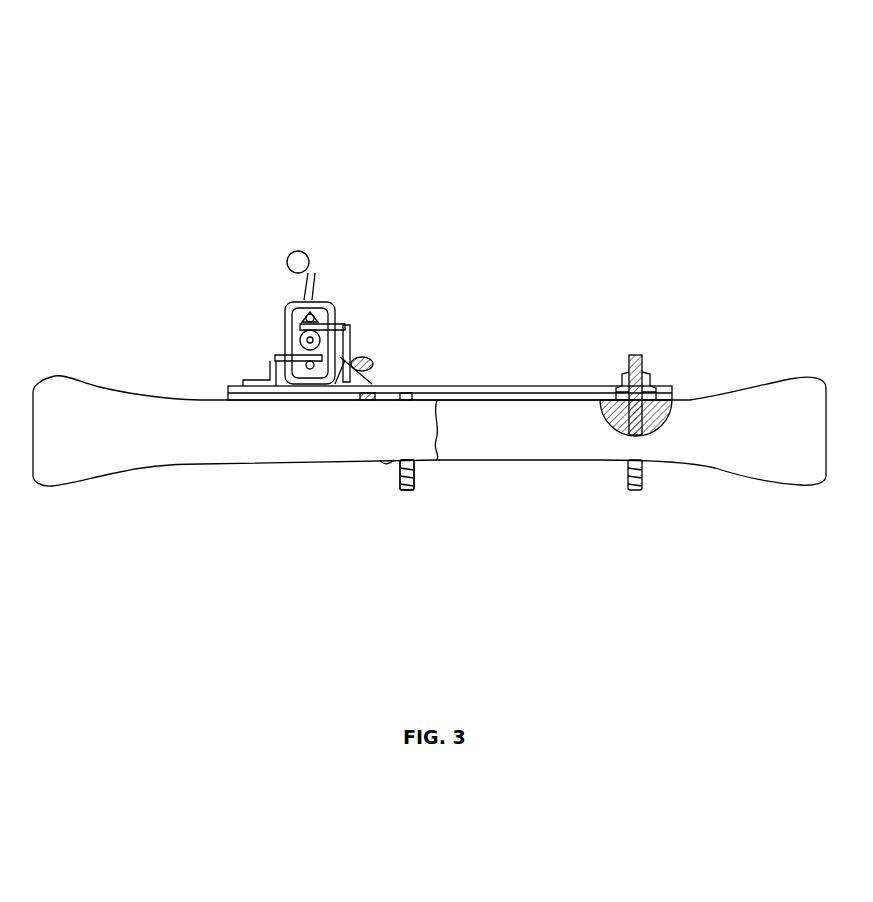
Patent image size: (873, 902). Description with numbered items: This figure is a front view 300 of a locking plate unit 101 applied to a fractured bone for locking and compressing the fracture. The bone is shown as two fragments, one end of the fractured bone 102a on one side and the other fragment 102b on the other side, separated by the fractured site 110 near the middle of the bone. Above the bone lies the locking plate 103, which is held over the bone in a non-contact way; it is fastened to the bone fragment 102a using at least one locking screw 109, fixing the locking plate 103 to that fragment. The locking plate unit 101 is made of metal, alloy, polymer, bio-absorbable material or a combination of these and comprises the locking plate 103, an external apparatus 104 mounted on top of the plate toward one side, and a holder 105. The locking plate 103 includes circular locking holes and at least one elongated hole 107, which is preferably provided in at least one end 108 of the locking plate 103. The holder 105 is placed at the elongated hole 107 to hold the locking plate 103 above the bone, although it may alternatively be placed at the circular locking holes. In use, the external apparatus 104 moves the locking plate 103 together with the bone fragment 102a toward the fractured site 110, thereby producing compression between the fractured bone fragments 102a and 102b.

The front view 300 is at (128, 85).
The locking plate unit 101 is at (490, 308).
The one end of fractured bone 102a is at (160, 440).
The second bone fragment 102b is at (556, 433).
The locking plate 103 is at (445, 384).
The external apparatus 104 is at (328, 268).
The holder 105 is at (650, 378).
The elongated hole 107 is at (615, 382).
The end of the locking plate 108 is at (672, 387).
The locking screw 109 is at (407, 384).
The fractured site 110 is at (437, 446).